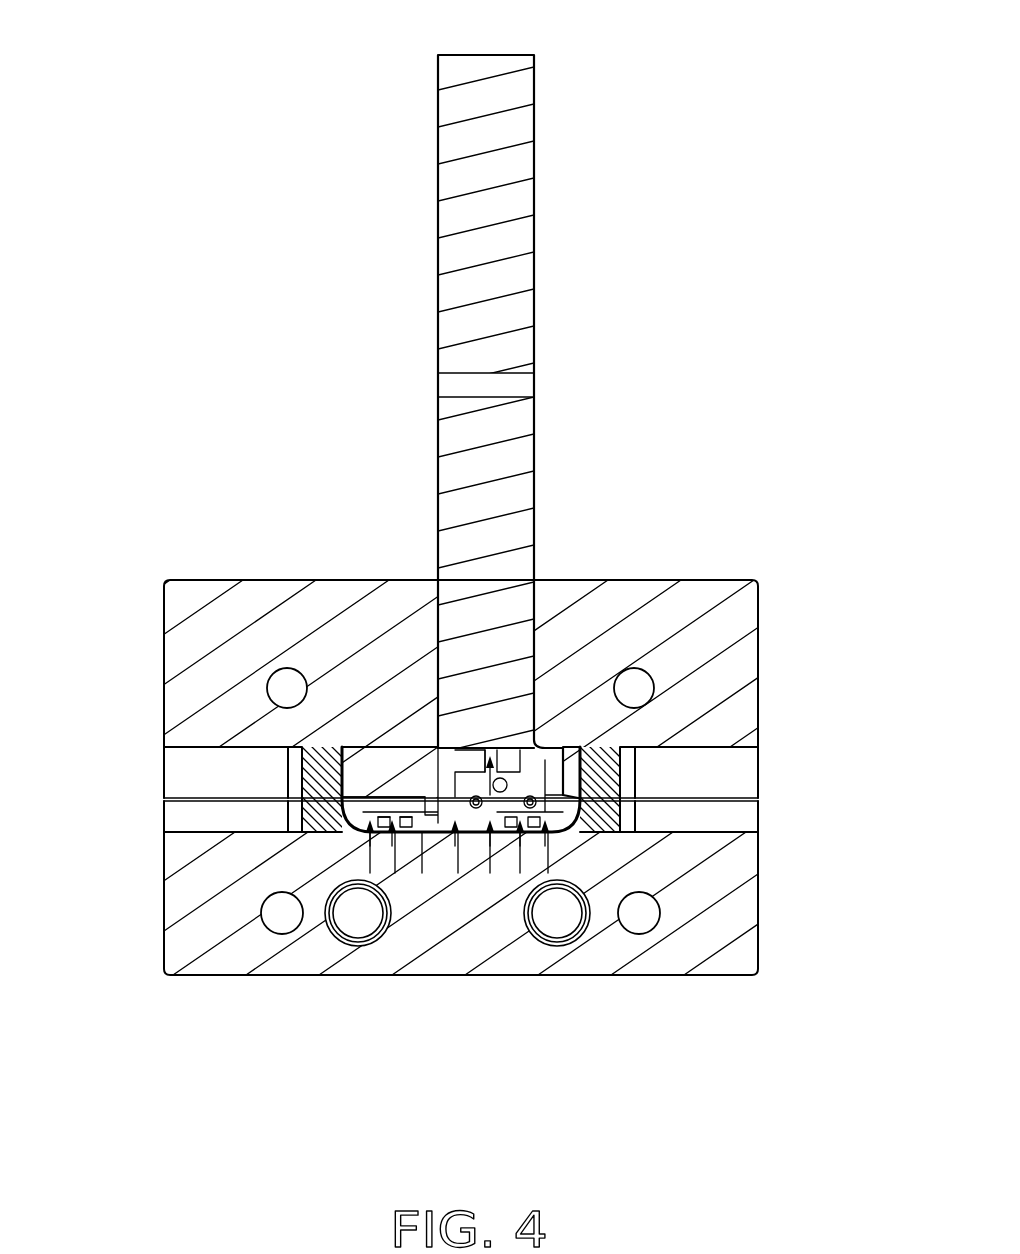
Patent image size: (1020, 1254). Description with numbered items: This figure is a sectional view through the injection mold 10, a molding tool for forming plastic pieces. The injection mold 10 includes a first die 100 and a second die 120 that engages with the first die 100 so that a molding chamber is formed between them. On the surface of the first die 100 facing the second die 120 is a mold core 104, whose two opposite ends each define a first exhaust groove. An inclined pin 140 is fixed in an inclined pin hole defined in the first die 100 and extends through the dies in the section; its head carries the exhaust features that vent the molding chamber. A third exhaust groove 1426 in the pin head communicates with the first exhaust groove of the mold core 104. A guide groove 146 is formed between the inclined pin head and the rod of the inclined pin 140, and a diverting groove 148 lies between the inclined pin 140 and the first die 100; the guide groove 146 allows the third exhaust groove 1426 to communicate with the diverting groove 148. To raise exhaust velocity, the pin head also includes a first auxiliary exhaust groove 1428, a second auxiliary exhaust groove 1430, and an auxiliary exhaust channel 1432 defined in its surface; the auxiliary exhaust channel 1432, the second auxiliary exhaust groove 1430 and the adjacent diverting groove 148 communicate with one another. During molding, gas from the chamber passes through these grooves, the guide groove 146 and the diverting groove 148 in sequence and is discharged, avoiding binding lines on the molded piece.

The injection mold 10 is at (250, 160).
The first die 100 is at (740, 665).
The mold core 104 is at (425, 797).
The second die 120 is at (720, 890).
The inclined pin 140 is at (505, 238).
The guide groove 146 is at (577, 812).
The diverting groove 148 is at (537, 612).
The third exhaust groove 1426 is at (488, 752).
The first auxiliary exhaust groove 1428 is at (488, 835).
The second auxiliary exhaust groove 1430 is at (390, 832).
The auxiliary exhaust channel 1432 is at (425, 807).